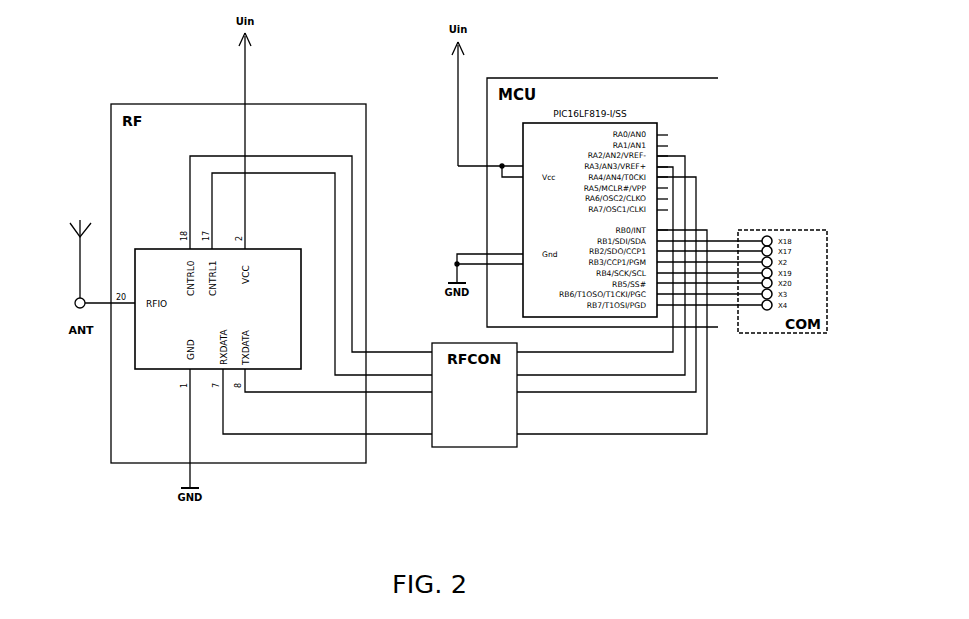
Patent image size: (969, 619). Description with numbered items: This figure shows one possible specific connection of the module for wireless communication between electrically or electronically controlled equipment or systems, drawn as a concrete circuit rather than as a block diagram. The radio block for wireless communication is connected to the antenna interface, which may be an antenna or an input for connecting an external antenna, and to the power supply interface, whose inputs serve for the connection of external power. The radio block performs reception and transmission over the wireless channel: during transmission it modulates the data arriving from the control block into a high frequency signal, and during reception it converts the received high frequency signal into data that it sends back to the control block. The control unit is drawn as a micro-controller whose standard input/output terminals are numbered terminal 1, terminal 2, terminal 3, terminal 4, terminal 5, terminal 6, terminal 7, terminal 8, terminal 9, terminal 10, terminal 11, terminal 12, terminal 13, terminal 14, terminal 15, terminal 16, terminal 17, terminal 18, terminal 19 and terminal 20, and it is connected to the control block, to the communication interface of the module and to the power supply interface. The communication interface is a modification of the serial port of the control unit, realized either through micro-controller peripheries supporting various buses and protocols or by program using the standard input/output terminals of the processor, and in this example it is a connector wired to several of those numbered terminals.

The PIC pin 1 (RA2/AN2/VREF-) 1 is at (662, 151).
The PIC pin 2 (RA3/AN3/VREF+) 2 is at (662, 162).
The PIC pin 3 (RA4/AN4/T0CKI) 3 is at (662, 172).
The PIC pin 4 (RA5/MCLR#/VPP) 4 is at (662, 183).
The PIC pin 5 (Gnd) 5 is at (518, 259).
The PIC pin 6 (Gnd) 6 is at (518, 249).
The PIC pin 7 (RB0/INT) 7 is at (662, 225).
The PIC pin 8 (RB1/SDI/SDA) 8 is at (709, 236).
The PIC pin 9 (RB2/SDO/CCP1) 9 is at (709, 246).
The PIC pin 10 (RB3/CCP1/PGM) 10 is at (709, 257).
The PIC pin 11 (RB4/SCK/SCL) 11 is at (709, 268).
The PIC pin 12 (RB5/SS#) 12 is at (709, 278).
The PIC pin 13 (RB6/T1OSO/T1CKI/PGC) 13 is at (709, 289).
The PIC pin 14 (RB7/T1OSI/PGD) 14 is at (709, 300).
The PIC pin 15 (Vcc) 15 is at (516, 172).
The PIC pin 16 (Vcc) 16 is at (516, 161).
The PIC pin 17 (RA6/OSC2/CLKO) 17 is at (663, 194).
The PIC pin 18 (RA7/OSC1/CLKI) 18 is at (663, 205).
The PIC pin 19 (RA0/AN0) 19 is at (663, 130).
The PIC pin 20 (RA1/AN1) 20 is at (663, 141).